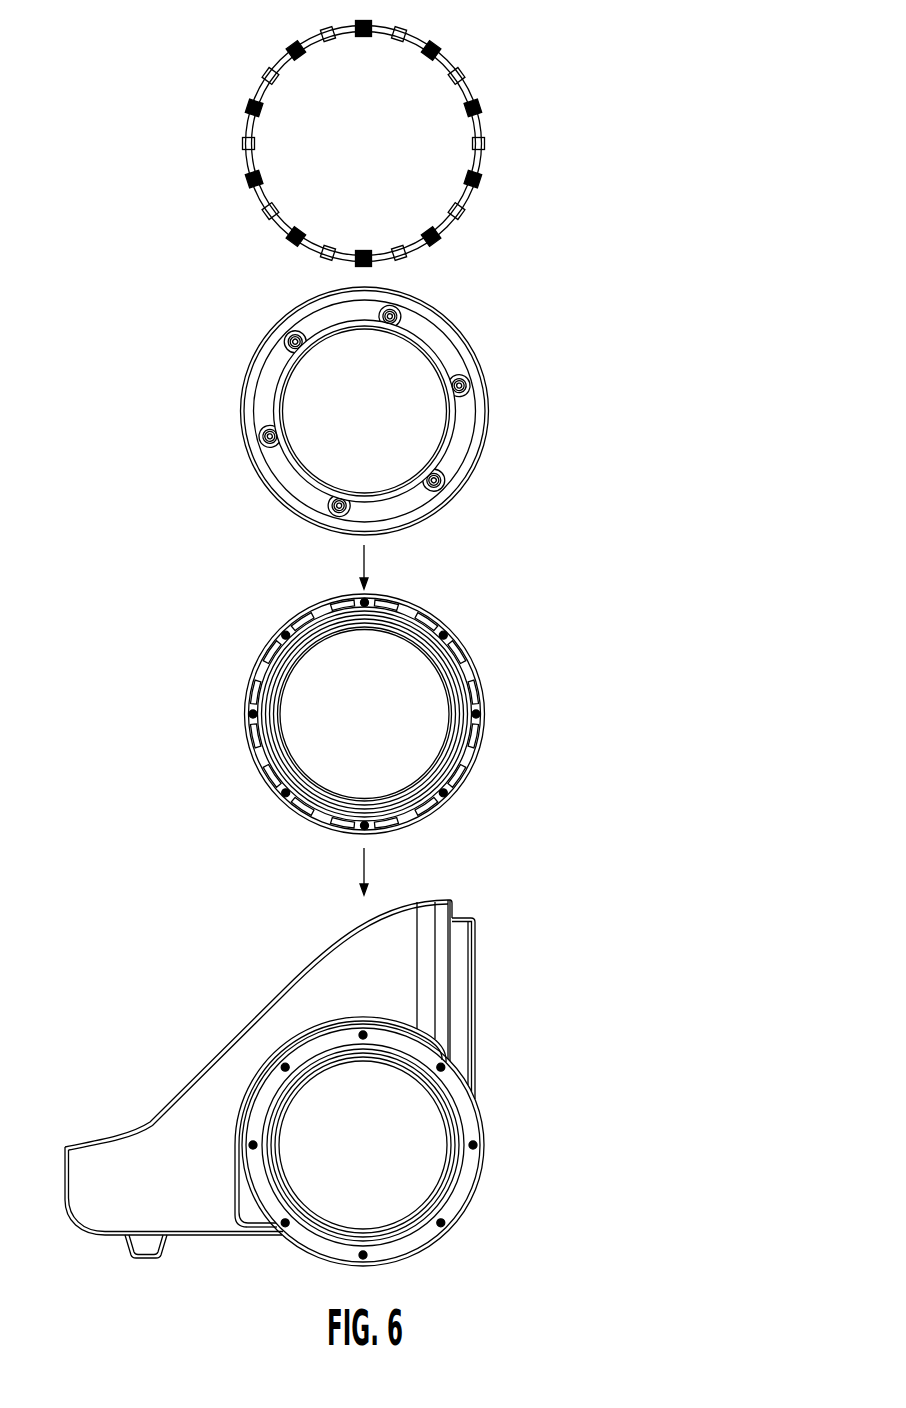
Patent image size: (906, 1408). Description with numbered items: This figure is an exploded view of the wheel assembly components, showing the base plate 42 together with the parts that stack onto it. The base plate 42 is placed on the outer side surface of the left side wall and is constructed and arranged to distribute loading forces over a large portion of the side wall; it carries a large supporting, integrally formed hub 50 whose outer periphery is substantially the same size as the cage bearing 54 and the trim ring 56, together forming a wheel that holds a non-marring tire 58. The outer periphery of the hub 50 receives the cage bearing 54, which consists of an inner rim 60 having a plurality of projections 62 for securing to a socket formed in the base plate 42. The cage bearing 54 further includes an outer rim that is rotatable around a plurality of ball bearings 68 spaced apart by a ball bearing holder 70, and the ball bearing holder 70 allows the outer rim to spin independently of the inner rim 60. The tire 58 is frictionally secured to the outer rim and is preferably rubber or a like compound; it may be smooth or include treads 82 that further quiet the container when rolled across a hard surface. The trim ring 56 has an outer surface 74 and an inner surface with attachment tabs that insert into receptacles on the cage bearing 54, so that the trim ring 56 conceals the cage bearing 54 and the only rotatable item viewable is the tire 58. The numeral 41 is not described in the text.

The housing 41 is at (305, 1083).
The base plate 42 is at (473, 1087).
The hub 50 is at (362, 1080).
The cage bearing 54 is at (395, 719).
The trim ring 56 is at (396, 411).
The tire 58 is at (401, 144).
The inner rim 60 is at (287, 683).
The projections 62 is at (314, 647).
The ball bearings 68 is at (455, 640).
The ball bearing holder 70 is at (440, 803).
The outer surface 74 is at (438, 352).
The treads 82 is at (475, 92).